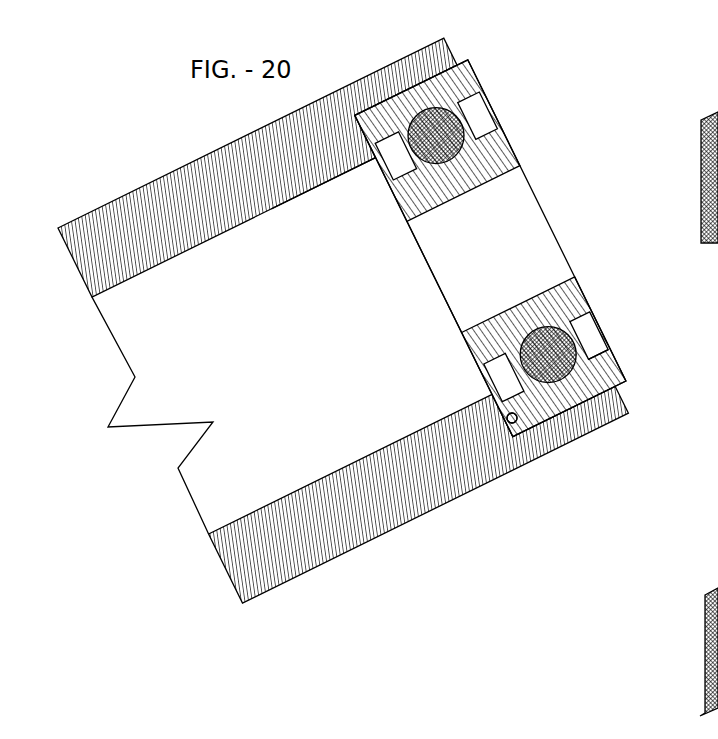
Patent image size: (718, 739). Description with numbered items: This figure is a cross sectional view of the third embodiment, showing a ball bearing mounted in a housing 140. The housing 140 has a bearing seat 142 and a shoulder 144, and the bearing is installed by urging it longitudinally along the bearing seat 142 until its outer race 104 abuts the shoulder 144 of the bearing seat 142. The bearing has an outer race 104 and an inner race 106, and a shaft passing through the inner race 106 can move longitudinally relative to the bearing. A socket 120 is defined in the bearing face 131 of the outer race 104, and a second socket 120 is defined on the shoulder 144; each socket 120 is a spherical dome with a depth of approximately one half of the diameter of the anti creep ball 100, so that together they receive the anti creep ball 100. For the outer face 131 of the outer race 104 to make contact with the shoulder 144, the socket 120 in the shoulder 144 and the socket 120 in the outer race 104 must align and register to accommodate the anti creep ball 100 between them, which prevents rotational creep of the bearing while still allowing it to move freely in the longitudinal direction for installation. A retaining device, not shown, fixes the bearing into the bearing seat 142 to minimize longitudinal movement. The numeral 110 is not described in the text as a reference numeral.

The anti creep ball 100 is at (465, 402).
The outer race 104 is at (605, 335).
The inner race 106 is at (581, 278).
The adjacent component 110 is at (626, 653).
The socket 120 is at (466, 432).
The bearing face 131 is at (290, 190).
The housing 140 is at (255, 571).
The bearing seat 142 is at (582, 428).
The shoulder 144 is at (512, 425).